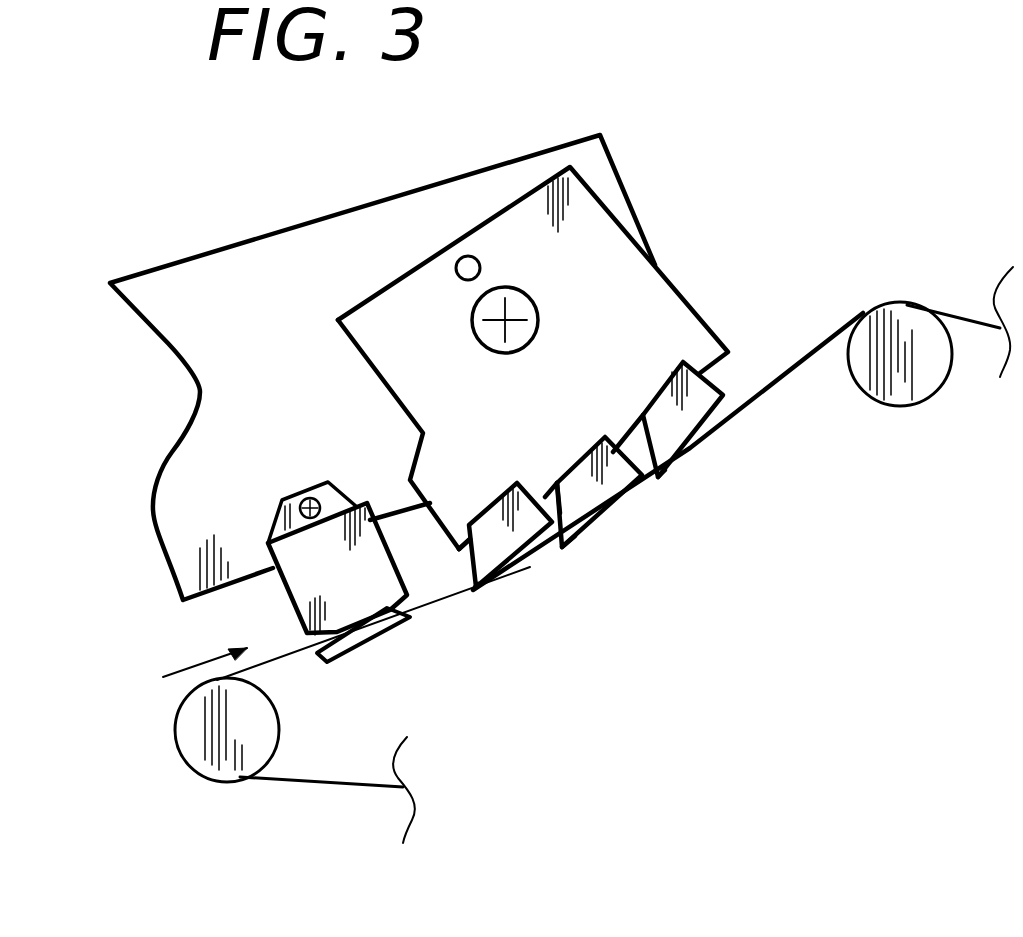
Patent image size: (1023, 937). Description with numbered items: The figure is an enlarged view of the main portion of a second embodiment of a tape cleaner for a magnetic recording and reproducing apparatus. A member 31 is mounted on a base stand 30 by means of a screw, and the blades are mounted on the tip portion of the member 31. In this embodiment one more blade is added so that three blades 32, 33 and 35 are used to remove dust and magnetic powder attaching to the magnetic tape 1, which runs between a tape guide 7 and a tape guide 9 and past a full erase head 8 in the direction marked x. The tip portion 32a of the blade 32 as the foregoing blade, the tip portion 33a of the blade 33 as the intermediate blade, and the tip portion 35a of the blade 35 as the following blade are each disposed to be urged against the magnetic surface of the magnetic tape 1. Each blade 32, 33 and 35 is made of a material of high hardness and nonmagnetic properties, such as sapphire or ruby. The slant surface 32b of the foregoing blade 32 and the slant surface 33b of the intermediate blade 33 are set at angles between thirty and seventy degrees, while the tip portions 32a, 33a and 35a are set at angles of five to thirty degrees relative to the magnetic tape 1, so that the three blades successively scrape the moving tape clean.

The base stand 30 is at (140, 318).
The member 31 is at (338, 326).
The blade 32 is at (502, 490).
The tip portion 32a is at (475, 587).
The slant surface 32b is at (458, 557).
The blade 33 is at (583, 460).
The tip portion 33a is at (573, 532).
The slant surface 33b is at (563, 513).
The blade 35 is at (643, 410).
The tip portion 35a is at (665, 470).
The full erase head 8 is at (290, 605).
The tape guide 7 is at (203, 772).
The tape guide 9 is at (907, 405).
The magnetic tape 1 is at (280, 780).
The tape travel direction x is at (172, 673).